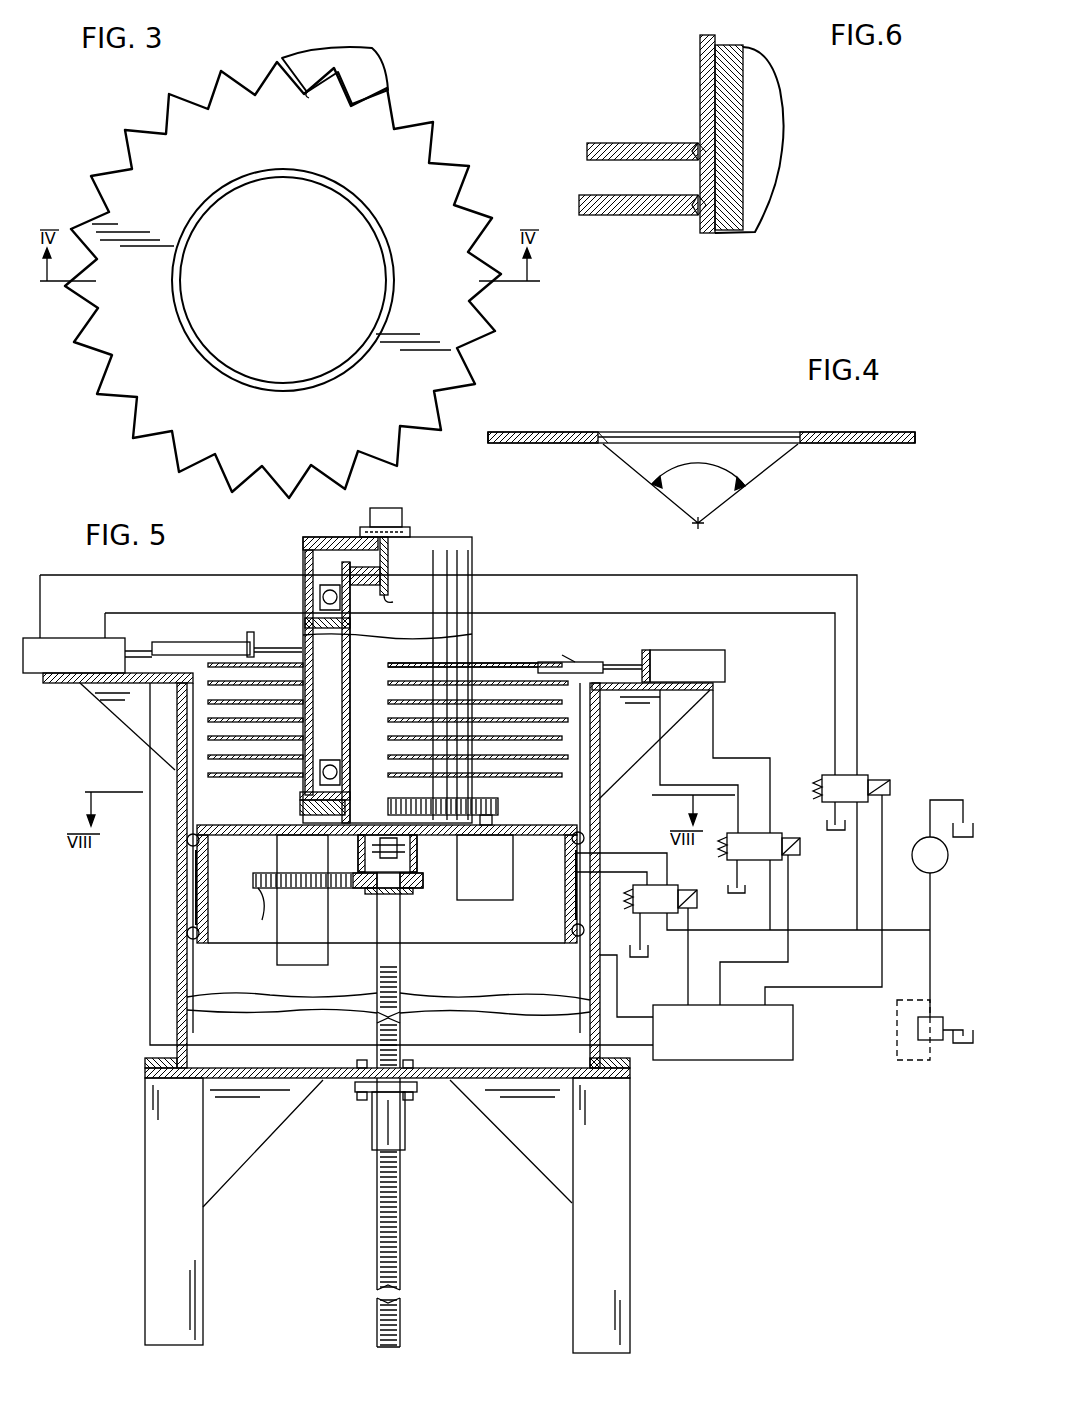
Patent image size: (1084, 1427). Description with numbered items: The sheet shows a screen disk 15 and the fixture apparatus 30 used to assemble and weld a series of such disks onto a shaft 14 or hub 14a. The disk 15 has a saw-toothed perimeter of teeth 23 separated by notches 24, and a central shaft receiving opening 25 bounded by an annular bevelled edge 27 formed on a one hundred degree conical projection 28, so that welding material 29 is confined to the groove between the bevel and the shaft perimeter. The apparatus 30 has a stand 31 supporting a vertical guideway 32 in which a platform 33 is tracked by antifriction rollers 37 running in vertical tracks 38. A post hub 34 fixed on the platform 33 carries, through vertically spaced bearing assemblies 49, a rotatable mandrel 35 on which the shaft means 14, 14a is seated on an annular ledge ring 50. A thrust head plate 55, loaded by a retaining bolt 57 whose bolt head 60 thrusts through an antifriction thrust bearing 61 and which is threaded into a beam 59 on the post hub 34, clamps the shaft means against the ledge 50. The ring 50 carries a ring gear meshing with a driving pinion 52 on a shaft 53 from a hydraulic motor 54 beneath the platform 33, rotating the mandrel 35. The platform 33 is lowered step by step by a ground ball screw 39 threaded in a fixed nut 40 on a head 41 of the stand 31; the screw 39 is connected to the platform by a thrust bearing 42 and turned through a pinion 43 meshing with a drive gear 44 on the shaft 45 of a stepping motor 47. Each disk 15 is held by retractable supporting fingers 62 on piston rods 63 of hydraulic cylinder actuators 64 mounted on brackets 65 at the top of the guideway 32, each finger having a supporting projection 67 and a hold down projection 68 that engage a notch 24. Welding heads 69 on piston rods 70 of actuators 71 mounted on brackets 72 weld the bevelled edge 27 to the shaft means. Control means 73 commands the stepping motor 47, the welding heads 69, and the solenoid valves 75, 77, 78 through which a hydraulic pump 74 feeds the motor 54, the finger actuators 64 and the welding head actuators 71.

In FIG. 6, the shaft 14 is at (651, 134).
In FIG. 5, the shaft 14 is at (433, 680).
In FIG. 6, the hub 14a is at (700, 63).
In FIG. 5, the hub 14a is at (472, 636).
In FIG. 3, the screen disk 15 is at (130, 188).
In FIG. 6, the screen disk 15 is at (617, 127).
In FIG. 4, the screen disk 15 is at (530, 432).
In FIG. 5, the screen disk 15 is at (235, 765).
In FIG. 3, the teeth 23 is at (372, 48).
In FIG. 4, the teeth 23 is at (912, 432).
In FIG. 3, the notches 24 is at (307, 96).
In FIG. 4, the notches 24 is at (508, 448).
In FIG. 3, the central shaft means receiving opening 25 is at (346, 266).
In FIG. 3, the bevelled edge 27 is at (382, 302).
In FIG. 6, the bevelled edge 27 is at (720, 185).
In FIG. 4, the bevelled edge 27 is at (705, 432).
In FIG. 4, the conical projection 28 is at (690, 518).
In FIG. 6, the welding material 29 is at (697, 145).
In FIG. 5, the fixture apparatus 30 is at (143, 758).
In FIG. 5, the stand 31 is at (152, 1137).
In FIG. 5, the vertical guideway 32 is at (185, 998).
In FIG. 5, the platform 33 is at (230, 840).
In FIG. 5, the post or hub 34 is at (305, 623).
In FIG. 6, the mandrel 35 is at (740, 172).
In FIG. 5, the mandrel 35 is at (312, 610).
In FIG. 5, the antifriction rollers or bearings 37 is at (185, 930).
In FIG. 5, the vertical tracks 38 is at (203, 900).
In FIG. 5, the ground ball screw 39 is at (400, 995).
In FIG. 5, the fixed nut 40 is at (390, 1125).
In FIG. 5, the head 41 is at (238, 1068).
In FIG. 5, the thrust bearing 42 is at (358, 860).
In FIG. 5, the pinion 43 is at (410, 892).
In FIG. 5, the drive gear 44 is at (262, 912).
In FIG. 5, the shaft 45 is at (290, 888).
In FIG. 5, the stepping motor 47 is at (313, 960).
In FIG. 5, the bearing assemblies 49 is at (322, 590).
In FIG. 5, the annular ledge ring 50 is at (302, 798).
In FIG. 5, the driving pinion 52 is at (498, 805).
In FIG. 5, the shaft 53 is at (492, 818).
In FIG. 5, the hydraulic motor 54 is at (500, 870).
In FIG. 5, the thrust head plate 55 is at (312, 537).
In FIG. 5, the retaining bolt 57 is at (382, 572).
In FIG. 5, the beam 59 is at (396, 600).
In FIG. 5, the bolt head 60 is at (384, 508).
In FIG. 5, the antifriction thrust bearing 61 is at (410, 528).
In FIG. 5, the retractable supporting fingers 62 is at (623, 663).
In FIG. 5, the piston rods 63 is at (648, 652).
In FIG. 5, the hydraulic cylinder actuators 64 is at (725, 660).
In FIG. 5, the brackets 65 is at (712, 696).
In FIG. 5, the digital disk supporting projection 67 is at (560, 660).
In FIG. 5, the hold down projection 68 is at (572, 660).
In FIG. 5, the welding heads 69 is at (250, 635).
In FIG. 5, the piston rods 70 is at (168, 645).
In FIG. 5, the hydraulic cylinder actuators 71 is at (80, 652).
In FIG. 5, the brackets 72 is at (100, 690).
In FIG. 5, the control means 73 is at (790, 1058).
In FIG. 5, the hydraulic pump 74 is at (940, 870).
In FIG. 5, the solenoid operated valve 75 is at (672, 910).
In FIG. 5, the solenoid operated valve 77 is at (772, 852).
In FIG. 5, the solenoid operated control valve 78 is at (858, 782).